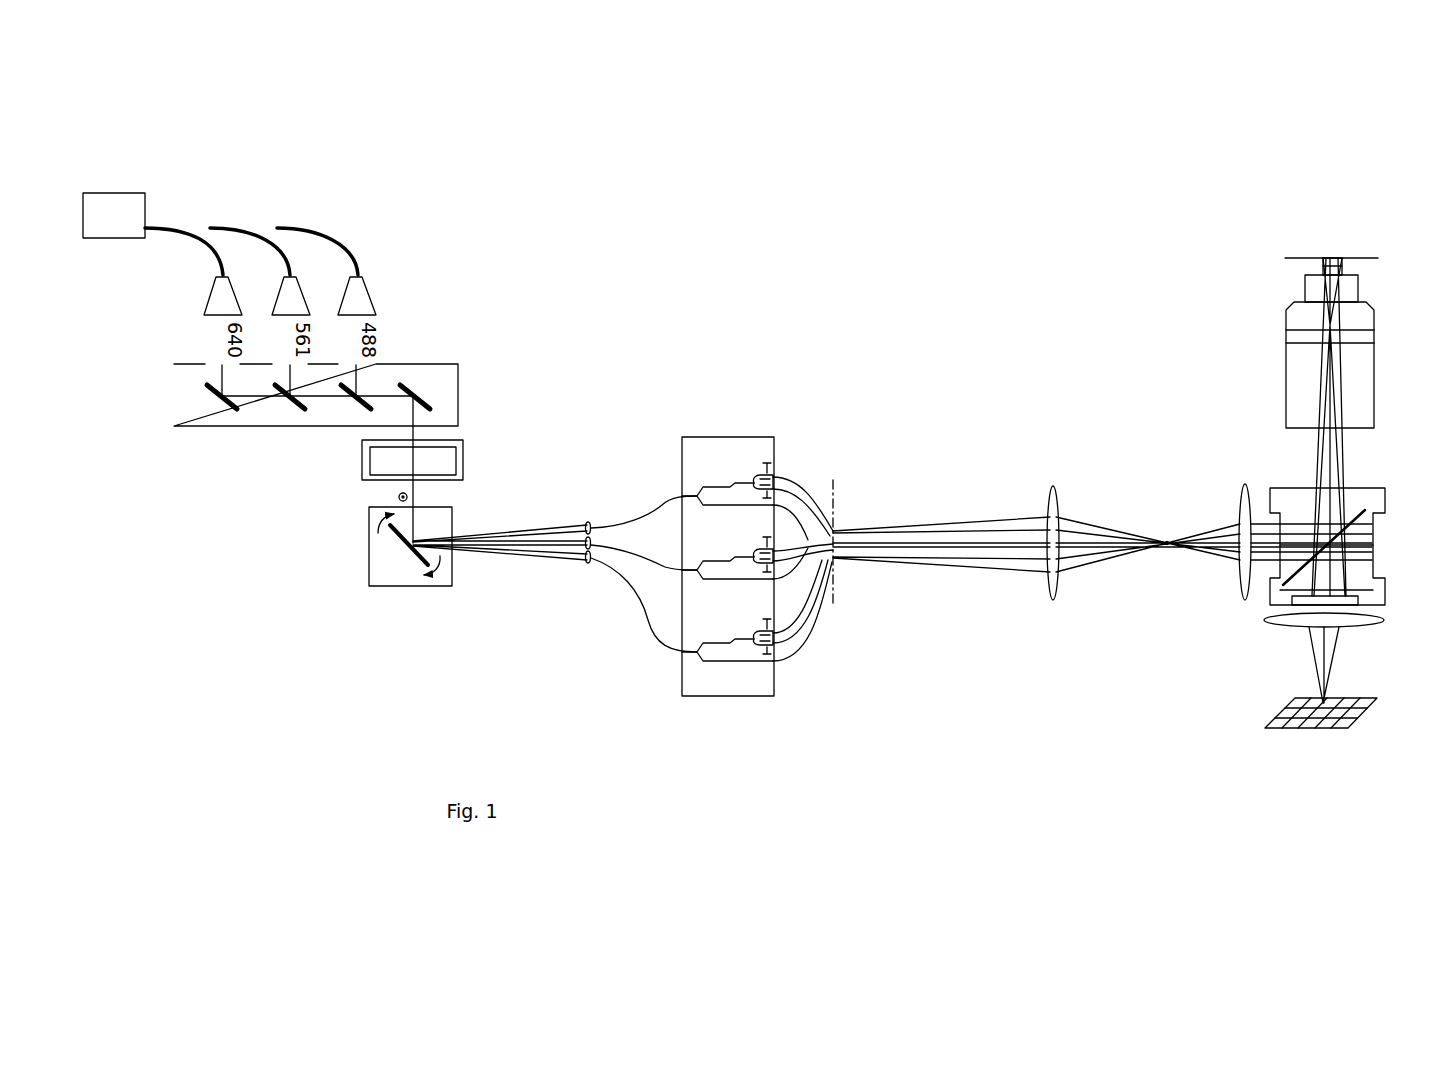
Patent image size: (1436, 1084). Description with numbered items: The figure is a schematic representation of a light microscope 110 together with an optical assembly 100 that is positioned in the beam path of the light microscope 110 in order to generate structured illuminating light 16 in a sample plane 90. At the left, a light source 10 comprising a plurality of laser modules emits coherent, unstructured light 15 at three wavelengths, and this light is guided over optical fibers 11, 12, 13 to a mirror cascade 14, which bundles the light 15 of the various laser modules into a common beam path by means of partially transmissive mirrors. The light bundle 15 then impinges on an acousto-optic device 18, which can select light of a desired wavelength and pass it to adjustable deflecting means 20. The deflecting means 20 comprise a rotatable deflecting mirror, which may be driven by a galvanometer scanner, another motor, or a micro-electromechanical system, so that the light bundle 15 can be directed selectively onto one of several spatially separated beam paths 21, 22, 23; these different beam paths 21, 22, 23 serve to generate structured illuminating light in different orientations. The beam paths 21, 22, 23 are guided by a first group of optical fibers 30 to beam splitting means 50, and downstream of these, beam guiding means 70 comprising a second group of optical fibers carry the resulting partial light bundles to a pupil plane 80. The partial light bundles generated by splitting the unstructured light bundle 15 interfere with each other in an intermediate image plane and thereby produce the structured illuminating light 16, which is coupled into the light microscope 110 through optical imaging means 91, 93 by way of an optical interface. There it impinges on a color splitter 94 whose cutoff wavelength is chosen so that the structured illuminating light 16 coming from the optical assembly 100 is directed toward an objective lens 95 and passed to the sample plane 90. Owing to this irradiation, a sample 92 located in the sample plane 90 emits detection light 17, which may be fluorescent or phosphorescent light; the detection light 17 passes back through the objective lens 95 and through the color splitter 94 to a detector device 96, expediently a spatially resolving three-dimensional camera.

The light source 10 is at (102, 226).
The optical fiber 11 is at (186, 240).
The optical fiber 12 is at (222, 226).
The optical fiber 13 is at (322, 226).
The mirror cascade 14 is at (428, 364).
The light bundle 15 is at (420, 437).
The structured illuminating light 16 is at (1167, 535).
The detection light 17 is at (1338, 652).
The acousto-optic device 18 is at (360, 460).
The adjustable deflecting means 20 is at (368, 546).
The beam path 21 is at (556, 527).
The beam path 22 is at (500, 538).
The beam path 23 is at (558, 562).
The first group of optical fibers 30 is at (596, 614).
The beam splitting means 50 is at (733, 705).
The beam guiding means 70 is at (813, 650).
The pupil plane 80 is at (836, 601).
The sample plane 90 is at (1352, 401).
The optical imaging means 91 is at (1047, 592).
The sample 92 is at (1333, 258).
The optical imaging means 93 is at (1238, 594).
The color splitter 94 is at (1372, 514).
The objective lens 95 is at (1375, 380).
The detector device 96 is at (1358, 725).
The optical assembly 100 is at (250, 653).
The light microscope 110 is at (1232, 747).